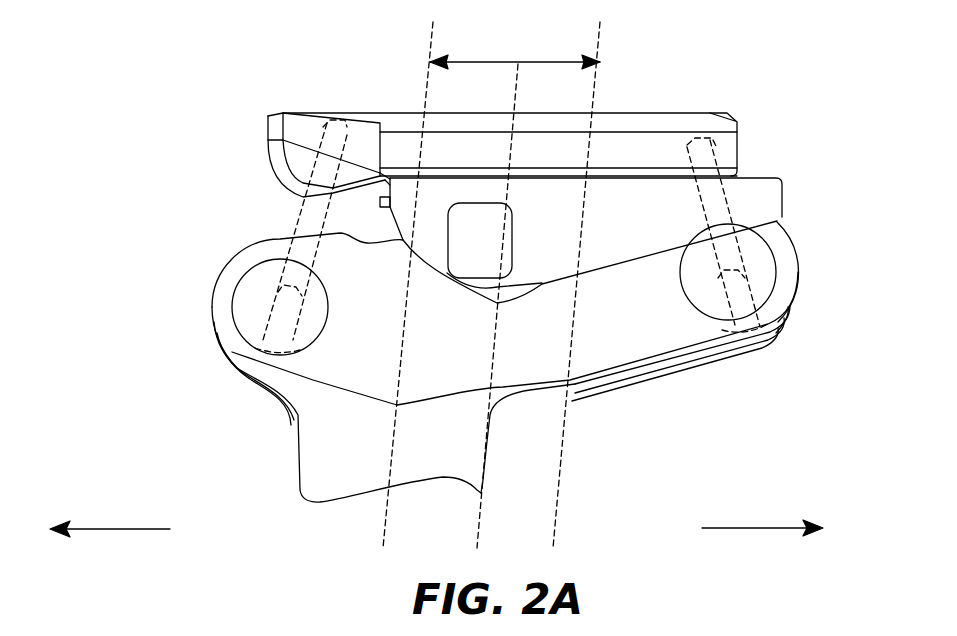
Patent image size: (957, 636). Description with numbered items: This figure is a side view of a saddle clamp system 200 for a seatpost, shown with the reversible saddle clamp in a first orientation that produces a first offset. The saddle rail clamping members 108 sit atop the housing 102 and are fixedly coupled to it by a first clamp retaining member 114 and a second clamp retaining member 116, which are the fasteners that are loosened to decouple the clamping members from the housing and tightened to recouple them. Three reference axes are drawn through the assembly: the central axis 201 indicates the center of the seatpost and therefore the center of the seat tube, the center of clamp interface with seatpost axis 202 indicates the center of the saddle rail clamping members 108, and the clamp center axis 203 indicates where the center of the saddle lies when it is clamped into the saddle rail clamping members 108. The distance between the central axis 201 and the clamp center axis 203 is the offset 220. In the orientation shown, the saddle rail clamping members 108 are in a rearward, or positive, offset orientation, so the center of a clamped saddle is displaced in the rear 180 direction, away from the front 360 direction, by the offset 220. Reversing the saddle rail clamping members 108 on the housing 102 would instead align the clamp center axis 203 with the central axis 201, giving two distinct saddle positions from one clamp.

The saddle clamp system 200 is at (200, 72).
The saddle rail clamping members 108 is at (251, 110).
The offset 220 is at (537, 62).
The housing 102 is at (213, 290).
The first clamp retaining member 114 is at (237, 370).
The second clamp retaining member 116 is at (787, 320).
The central axis 201 is at (385, 515).
The center of clamp interface with seatpost axis 202 is at (478, 515).
The clamp center axis 203 is at (553, 515).
The front direction 360 is at (105, 528).
The rear direction 180 is at (742, 527).